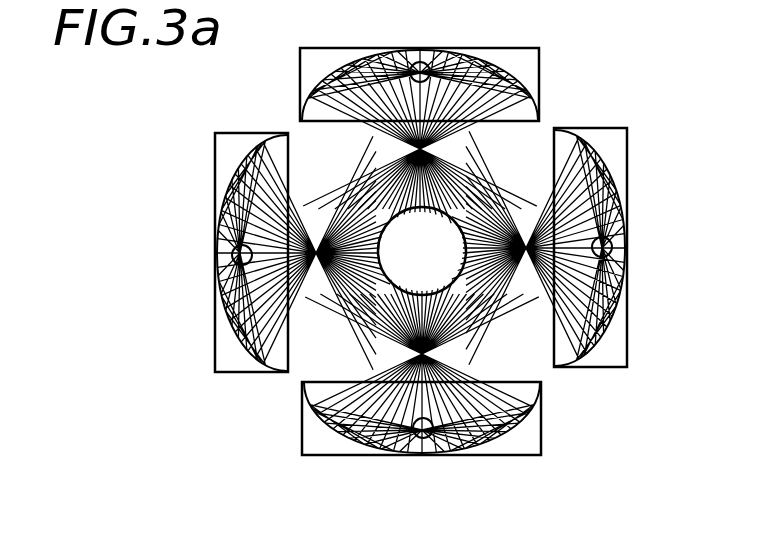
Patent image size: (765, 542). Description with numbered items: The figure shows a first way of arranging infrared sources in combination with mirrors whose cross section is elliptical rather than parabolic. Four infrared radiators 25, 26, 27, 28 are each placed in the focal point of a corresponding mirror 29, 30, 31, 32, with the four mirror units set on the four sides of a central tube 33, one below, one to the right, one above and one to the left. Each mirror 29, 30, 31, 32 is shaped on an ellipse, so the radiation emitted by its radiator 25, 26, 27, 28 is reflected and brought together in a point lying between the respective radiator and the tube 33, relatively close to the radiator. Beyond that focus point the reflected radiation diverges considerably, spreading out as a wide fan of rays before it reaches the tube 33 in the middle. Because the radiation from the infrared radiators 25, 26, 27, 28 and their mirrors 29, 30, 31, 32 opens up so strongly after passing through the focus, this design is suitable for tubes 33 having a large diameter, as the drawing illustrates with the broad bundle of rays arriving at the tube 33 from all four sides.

The infrared radiator 25 is at (423, 440).
The infrared radiator 26 is at (612, 246).
The infrared radiator 27 is at (433, 60).
The infrared radiator 28 is at (230, 255).
The mirror 29 is at (337, 433).
The mirror 30 is at (612, 168).
The mirror 31 is at (346, 73).
The mirror 32 is at (239, 173).
The tube 33 is at (455, 212).